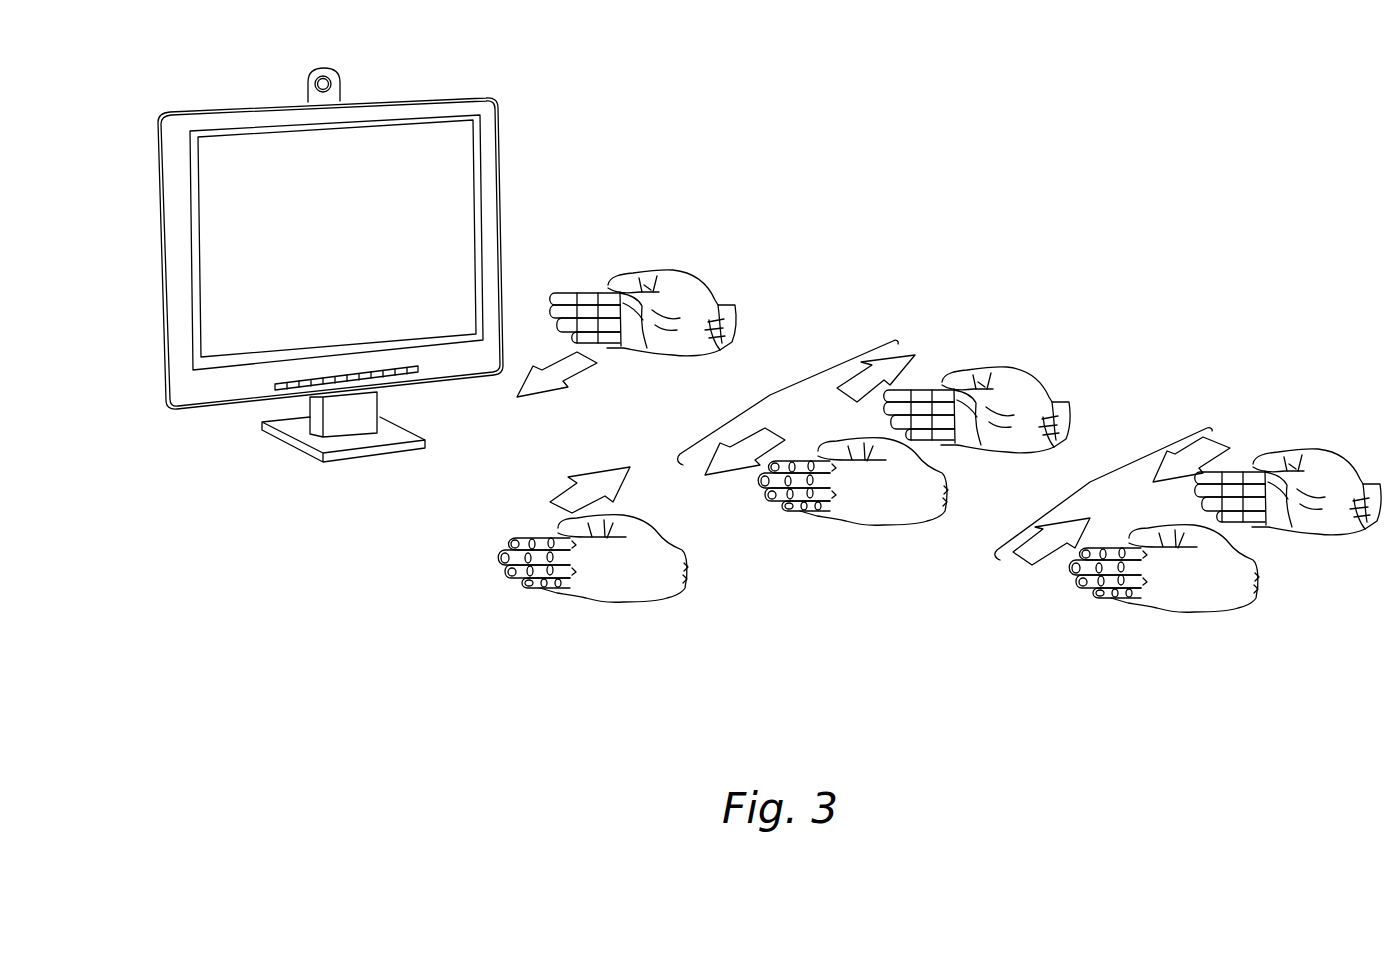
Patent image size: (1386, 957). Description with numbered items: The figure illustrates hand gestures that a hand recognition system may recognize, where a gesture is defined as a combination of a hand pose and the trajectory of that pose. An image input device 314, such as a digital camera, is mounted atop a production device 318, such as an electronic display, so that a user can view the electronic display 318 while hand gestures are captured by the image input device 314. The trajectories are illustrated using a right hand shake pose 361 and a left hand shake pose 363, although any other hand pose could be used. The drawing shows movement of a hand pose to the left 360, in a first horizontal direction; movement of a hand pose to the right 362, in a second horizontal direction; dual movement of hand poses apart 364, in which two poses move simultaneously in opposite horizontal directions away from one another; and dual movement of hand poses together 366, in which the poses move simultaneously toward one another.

The image input device 314 is at (322, 68).
The production device 318 is at (448, 98).
The movement of a hand pose to the left 360 is at (582, 375).
The right hand shake pose 361 is at (671, 271).
The movement of a hand pose to the right 362 is at (553, 488).
The left hand shake pose 363 is at (627, 602).
The dual movement of hand poses apart 364 is at (770, 395).
The dual movement of hand poses together 366 is at (1090, 482).